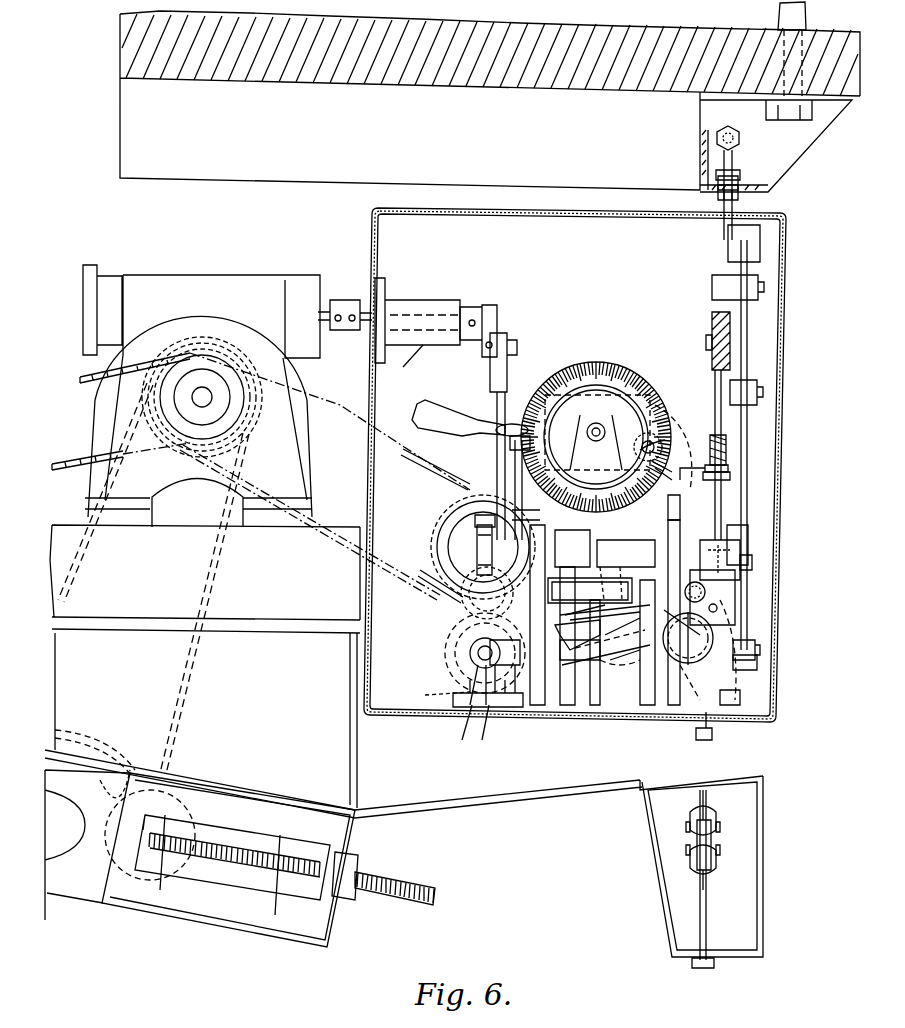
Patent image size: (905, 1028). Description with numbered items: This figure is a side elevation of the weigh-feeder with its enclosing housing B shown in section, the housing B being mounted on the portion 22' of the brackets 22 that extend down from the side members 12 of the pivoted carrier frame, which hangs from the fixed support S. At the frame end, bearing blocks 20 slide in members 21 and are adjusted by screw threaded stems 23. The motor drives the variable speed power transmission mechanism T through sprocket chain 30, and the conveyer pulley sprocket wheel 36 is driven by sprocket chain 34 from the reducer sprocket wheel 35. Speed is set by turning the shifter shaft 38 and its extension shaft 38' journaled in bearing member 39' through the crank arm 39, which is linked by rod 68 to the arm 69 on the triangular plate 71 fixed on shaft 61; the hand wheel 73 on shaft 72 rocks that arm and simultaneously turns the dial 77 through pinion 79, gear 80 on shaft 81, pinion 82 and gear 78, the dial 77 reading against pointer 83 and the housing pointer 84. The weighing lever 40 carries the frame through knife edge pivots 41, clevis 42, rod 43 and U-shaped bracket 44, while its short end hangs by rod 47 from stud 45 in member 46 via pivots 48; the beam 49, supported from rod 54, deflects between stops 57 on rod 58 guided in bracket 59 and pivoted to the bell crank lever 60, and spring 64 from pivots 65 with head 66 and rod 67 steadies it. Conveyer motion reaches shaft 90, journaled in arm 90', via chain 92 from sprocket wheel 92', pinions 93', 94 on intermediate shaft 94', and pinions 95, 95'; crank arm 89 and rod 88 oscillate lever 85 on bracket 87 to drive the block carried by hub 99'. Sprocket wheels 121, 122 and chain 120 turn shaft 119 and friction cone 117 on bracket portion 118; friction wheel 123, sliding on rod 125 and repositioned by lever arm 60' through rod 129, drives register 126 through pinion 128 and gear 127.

The support S is at (540, 90).
The variable speed power transmission mechanism T is at (208, 283).
The housing B is at (468, 215).
The side members 12 is at (205, 579).
The bearing blocks 20 is at (95, 925).
The members 21 is at (208, 935).
The brackets 22 is at (201, 725).
The bracket portion 22' is at (559, 791).
The screw threaded stems 23 is at (372, 905).
The sprocket chain 30 is at (60, 460).
The sprocket chain 34 is at (185, 690).
The sprocket wheel 35 is at (170, 455).
The sprocket wheel 36 is at (100, 755).
The shifter shaft 38 is at (345, 296).
The shaft 38' is at (417, 316).
The crank arm 39 is at (496, 341).
The bearing member 39' is at (403, 365).
The weighing lever 40 is at (712, 848).
The knife edge pivots 41 is at (690, 850).
The clevis 42 is at (706, 876).
The rod 43 is at (708, 912).
The U-shaped bracket 44 is at (764, 893).
The stud 45 is at (742, 137).
The member 46 is at (790, 152).
The rod 47 is at (740, 160).
The knife edge pivots 48 is at (720, 823).
The beam 49 is at (712, 318).
The rod 54 is at (722, 230).
The stops 57 is at (712, 290).
The rod 58 is at (748, 320).
The bracket 59 is at (760, 240).
The bell crank lever 60 is at (756, 551).
The lever arm 60' is at (751, 597).
The shaft 61 is at (666, 548).
The spring 64 is at (727, 450).
The pivots 65 is at (706, 340).
The head 66 is at (730, 477).
The rod 67 is at (722, 500).
The rod 68 is at (497, 398).
The arm 69 is at (477, 548).
The plate 71 is at (540, 512).
The shaft 72 is at (602, 422).
The hand wheel 73 is at (582, 385).
The dial 77 is at (612, 375).
The gear 78 is at (645, 385).
The pinion 79 is at (584, 611).
The gear 80 is at (672, 423).
The shaft 81 is at (662, 465).
The pinion 82 is at (660, 478).
The pointer 83 is at (505, 433).
The pointer 84 is at (422, 400).
The lever 85 is at (582, 632).
The bracket 87 is at (580, 718).
The rod 88 is at (607, 638).
The crank arm 89 is at (453, 673).
The shaft 90 is at (447, 668).
The arm 90' is at (493, 708).
The sprocket chain 92 is at (421, 526).
The sprocket wheel 92' is at (325, 476).
The pinion 93' is at (471, 547).
The pinion 94 is at (465, 593).
The intermediate shaft 94' is at (441, 594).
The pinion 95 is at (458, 653).
The pinion 95' is at (444, 653).
The hub 99' is at (605, 543).
The friction cone 117 is at (712, 635).
The upstanding bracket portion 118 is at (760, 700).
The shaft 119 is at (725, 655).
The sprocket chain 120 is at (648, 718).
The sprocket wheel 121 is at (465, 720).
The sprocket wheel 122 is at (720, 680).
The friction wheel 123 is at (752, 562).
The rod 125 is at (718, 607).
The register 126 is at (558, 603).
The gear 127 is at (678, 509).
The pinion 128 is at (705, 592).
The rod 129 is at (760, 640).